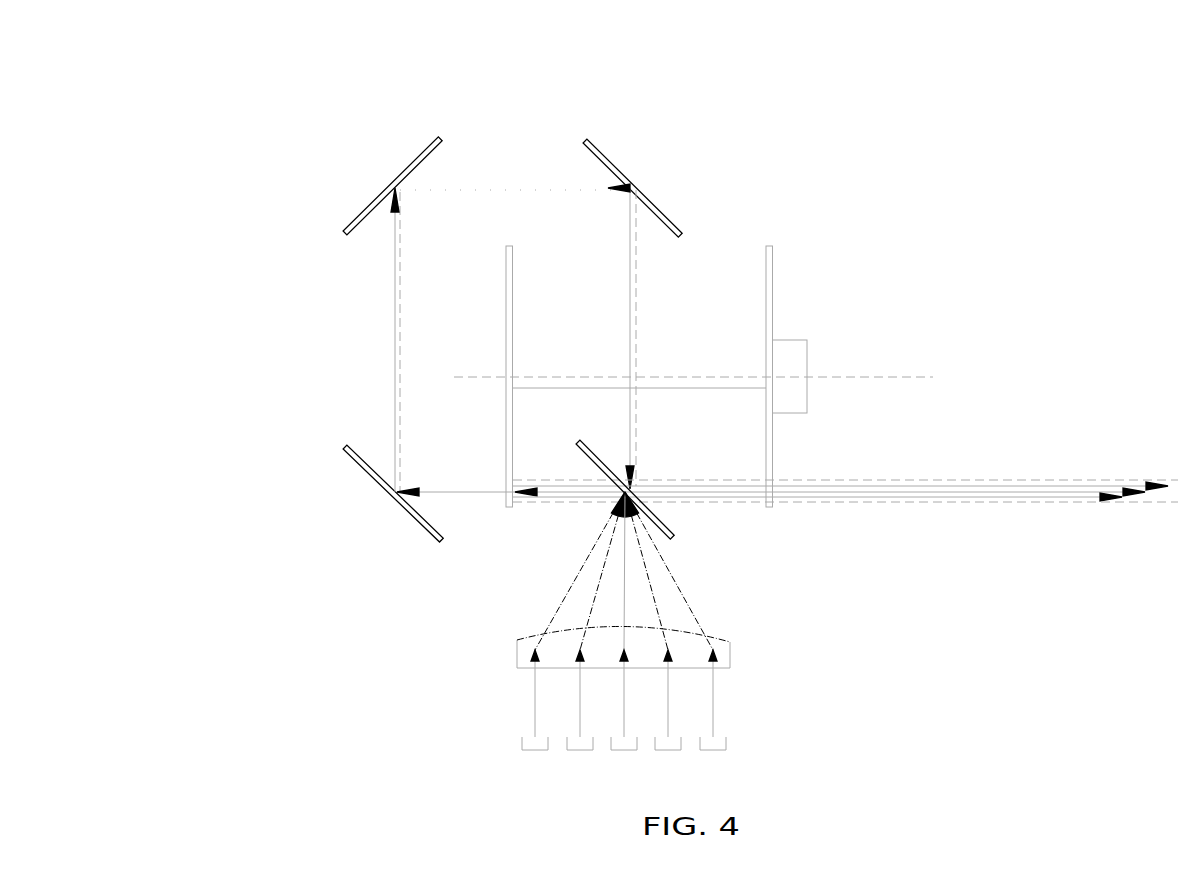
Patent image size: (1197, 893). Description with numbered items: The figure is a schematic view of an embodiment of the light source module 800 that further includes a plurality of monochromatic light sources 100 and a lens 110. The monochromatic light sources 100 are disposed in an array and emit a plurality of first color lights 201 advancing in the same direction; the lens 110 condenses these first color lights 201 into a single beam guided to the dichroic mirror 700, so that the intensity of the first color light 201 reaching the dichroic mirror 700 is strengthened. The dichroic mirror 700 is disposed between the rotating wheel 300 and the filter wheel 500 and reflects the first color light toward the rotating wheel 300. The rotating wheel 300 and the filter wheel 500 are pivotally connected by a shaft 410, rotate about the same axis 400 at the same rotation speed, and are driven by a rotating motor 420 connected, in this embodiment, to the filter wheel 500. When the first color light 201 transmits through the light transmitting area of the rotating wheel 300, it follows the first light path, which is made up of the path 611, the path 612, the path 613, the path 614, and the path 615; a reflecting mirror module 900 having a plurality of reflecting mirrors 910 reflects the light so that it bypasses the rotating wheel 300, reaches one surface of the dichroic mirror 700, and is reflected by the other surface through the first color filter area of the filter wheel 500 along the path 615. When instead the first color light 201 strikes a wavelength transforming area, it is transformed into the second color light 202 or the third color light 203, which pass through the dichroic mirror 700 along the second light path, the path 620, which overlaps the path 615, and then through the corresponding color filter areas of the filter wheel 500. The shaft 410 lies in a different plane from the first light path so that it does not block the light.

The light source module 800 is at (197, 79).
The reflecting mirror module 900 is at (273, 217).
The reflecting mirror 910 is at (597, 158).
The path 612 is at (398, 340).
The path 613 is at (455, 192).
The path 614 is at (637, 313).
The path 611 is at (452, 497).
The path 615 is at (895, 480).
The path 620 is at (892, 503).
The third color light 203 is at (990, 482).
The second color light 202 is at (987, 502).
The rotating wheel 300 is at (510, 508).
The filter wheel 500 is at (768, 508).
The shaft 410 is at (677, 365).
The axis 400 is at (853, 377).
The rotating motor 420 is at (796, 353).
The dichroic mirror 700 is at (667, 529).
The lens 110 is at (728, 652).
The first color light 201 is at (712, 698).
The monochromatic light source 100 is at (723, 744).